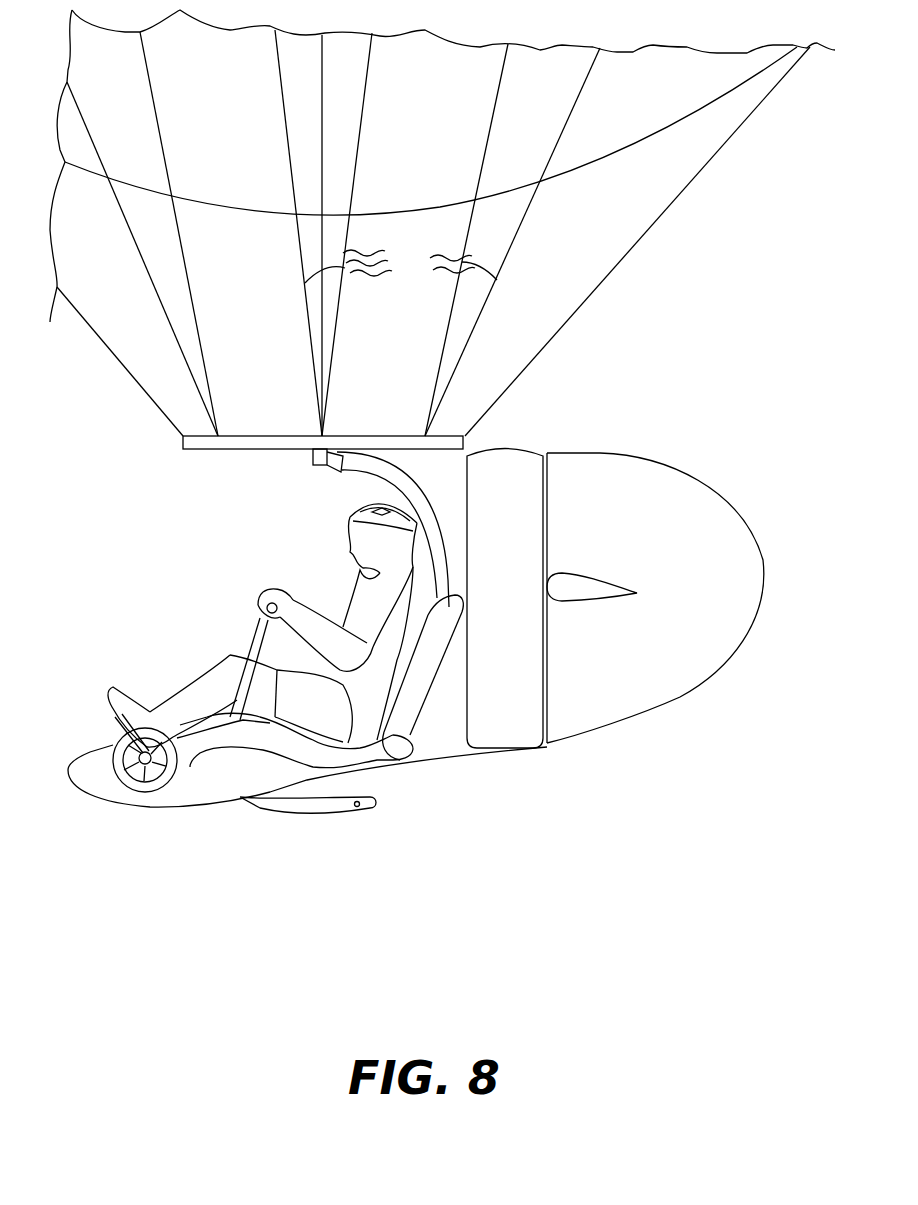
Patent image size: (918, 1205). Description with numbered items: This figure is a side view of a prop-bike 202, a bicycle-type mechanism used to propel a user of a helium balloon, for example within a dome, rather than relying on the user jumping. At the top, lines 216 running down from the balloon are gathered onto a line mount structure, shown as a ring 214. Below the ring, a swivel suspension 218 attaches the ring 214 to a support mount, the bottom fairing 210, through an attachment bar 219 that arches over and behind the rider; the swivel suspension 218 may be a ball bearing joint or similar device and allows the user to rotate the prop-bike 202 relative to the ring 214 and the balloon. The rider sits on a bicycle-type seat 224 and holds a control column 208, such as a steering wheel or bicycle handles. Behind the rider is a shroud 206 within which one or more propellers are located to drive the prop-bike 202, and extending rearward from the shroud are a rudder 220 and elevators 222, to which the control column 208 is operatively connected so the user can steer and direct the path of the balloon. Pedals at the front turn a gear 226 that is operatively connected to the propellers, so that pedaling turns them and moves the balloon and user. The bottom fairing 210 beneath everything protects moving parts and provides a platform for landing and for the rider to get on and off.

The prop-bike 202 is at (160, 544).
The shroud 206 is at (515, 460).
The control column 208 is at (252, 643).
The bottom fairing 210 is at (153, 808).
The ring 214 is at (290, 435).
The lines 216 is at (442, 223).
The swivel suspension 218 is at (314, 466).
The attachment bar 219 is at (438, 500).
The rudder 220 is at (693, 472).
The elevators 222 is at (580, 573).
The seat 224 is at (378, 752).
The gear 226 is at (113, 735).